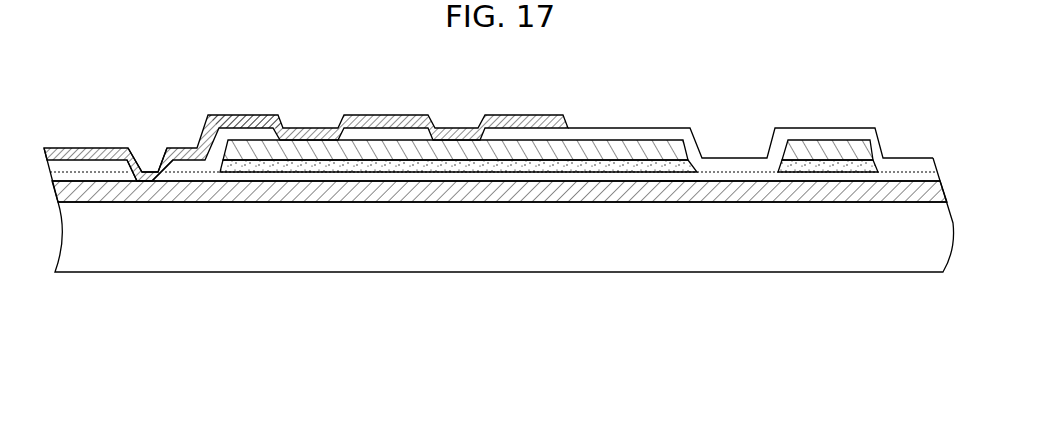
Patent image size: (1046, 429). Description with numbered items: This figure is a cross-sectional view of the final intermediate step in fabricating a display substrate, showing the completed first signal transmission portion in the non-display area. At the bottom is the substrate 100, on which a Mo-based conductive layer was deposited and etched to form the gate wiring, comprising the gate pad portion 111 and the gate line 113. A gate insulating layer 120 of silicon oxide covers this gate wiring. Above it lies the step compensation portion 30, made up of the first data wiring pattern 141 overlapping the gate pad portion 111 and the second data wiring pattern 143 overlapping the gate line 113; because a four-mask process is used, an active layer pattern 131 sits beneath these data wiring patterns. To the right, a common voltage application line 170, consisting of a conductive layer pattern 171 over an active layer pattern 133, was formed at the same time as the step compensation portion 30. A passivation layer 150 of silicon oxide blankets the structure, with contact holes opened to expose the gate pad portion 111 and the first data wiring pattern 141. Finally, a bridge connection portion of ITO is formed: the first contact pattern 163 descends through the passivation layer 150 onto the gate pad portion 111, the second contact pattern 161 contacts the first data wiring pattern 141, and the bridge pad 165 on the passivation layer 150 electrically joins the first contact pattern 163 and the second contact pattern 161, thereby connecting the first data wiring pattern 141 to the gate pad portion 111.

The substrate 100 is at (142, 257).
The gate pad portion 111 is at (242, 203).
The gate line 113 is at (681, 173).
The gate insulating layer 120 is at (400, 178).
The first data wiring pattern 141 is at (320, 182).
The active layer pattern 131 is at (540, 166).
The second data wiring pattern 143 is at (600, 150).
The step compensation portion 30 is at (550, 328).
The active layer pattern 133 is at (790, 166).
The conductive layer pattern 171 is at (853, 150).
The common voltage application line 170 is at (800, 328).
The passivation layer 150 is at (617, 137).
The second contact pattern 161 is at (300, 130).
The bridge pad 165 is at (245, 117).
The first contact pattern 163 is at (148, 168).